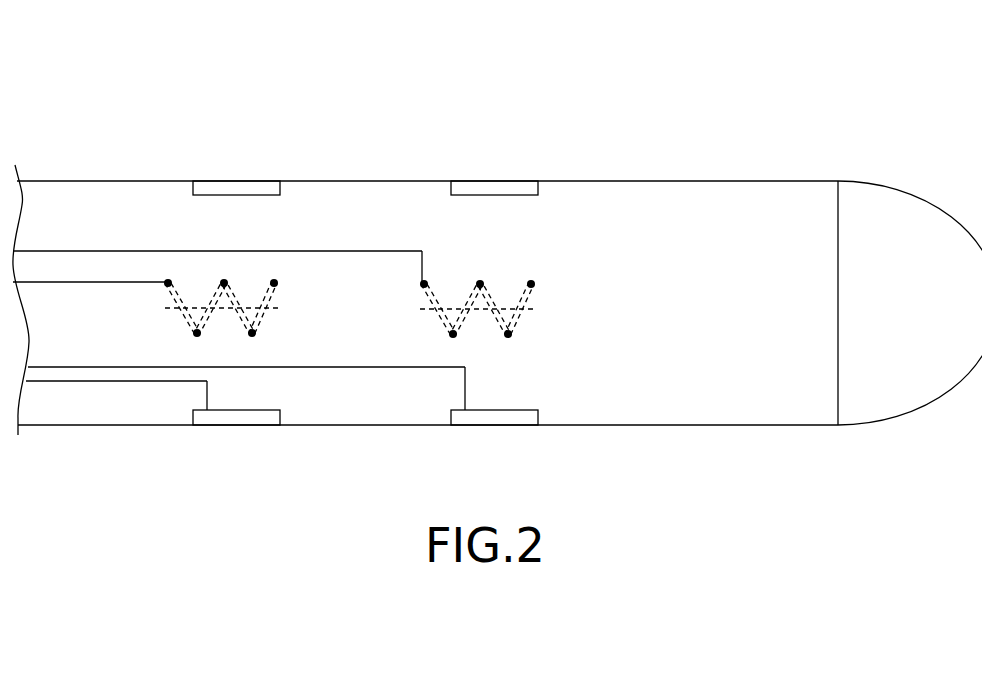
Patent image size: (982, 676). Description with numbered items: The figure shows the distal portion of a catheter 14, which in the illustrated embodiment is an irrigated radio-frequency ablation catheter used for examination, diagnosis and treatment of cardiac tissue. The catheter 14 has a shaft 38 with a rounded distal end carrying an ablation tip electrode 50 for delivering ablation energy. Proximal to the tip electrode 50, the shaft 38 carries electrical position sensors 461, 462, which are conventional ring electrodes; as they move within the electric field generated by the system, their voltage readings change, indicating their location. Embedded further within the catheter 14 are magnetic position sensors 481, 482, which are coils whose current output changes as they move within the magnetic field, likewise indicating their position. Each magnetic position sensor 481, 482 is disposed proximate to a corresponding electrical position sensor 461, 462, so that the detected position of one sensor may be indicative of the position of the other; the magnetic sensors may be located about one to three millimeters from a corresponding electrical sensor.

The catheter 14 is at (497, 250).
The shaft 38 is at (712, 402).
The ablation tip electrode 50 is at (940, 247).
The electrical position sensor 461 is at (246, 181).
The electrical position sensor 462 is at (493, 195).
The magnetic position sensor 481 is at (273, 298).
The magnetic position sensor 482 is at (531, 298).